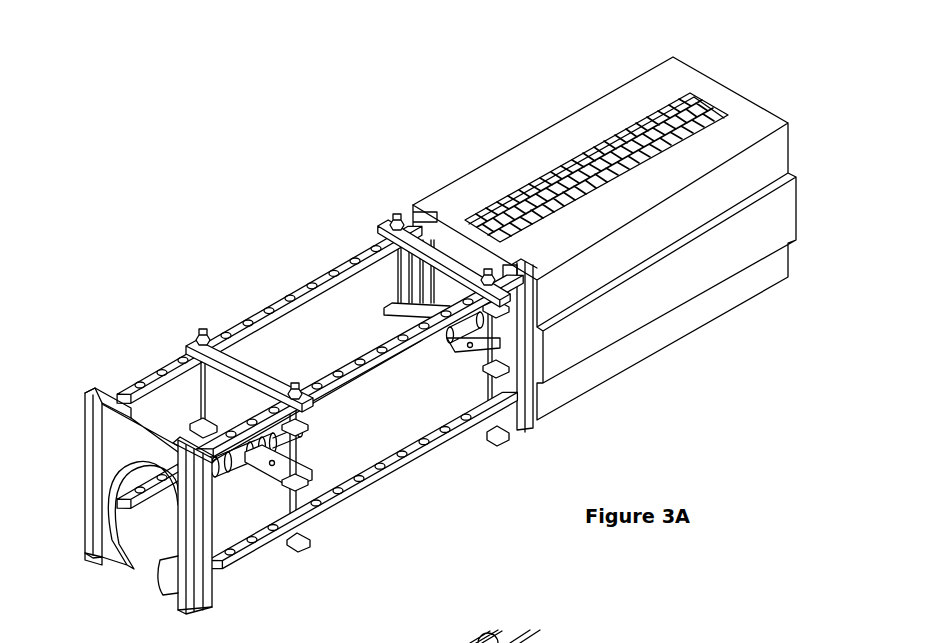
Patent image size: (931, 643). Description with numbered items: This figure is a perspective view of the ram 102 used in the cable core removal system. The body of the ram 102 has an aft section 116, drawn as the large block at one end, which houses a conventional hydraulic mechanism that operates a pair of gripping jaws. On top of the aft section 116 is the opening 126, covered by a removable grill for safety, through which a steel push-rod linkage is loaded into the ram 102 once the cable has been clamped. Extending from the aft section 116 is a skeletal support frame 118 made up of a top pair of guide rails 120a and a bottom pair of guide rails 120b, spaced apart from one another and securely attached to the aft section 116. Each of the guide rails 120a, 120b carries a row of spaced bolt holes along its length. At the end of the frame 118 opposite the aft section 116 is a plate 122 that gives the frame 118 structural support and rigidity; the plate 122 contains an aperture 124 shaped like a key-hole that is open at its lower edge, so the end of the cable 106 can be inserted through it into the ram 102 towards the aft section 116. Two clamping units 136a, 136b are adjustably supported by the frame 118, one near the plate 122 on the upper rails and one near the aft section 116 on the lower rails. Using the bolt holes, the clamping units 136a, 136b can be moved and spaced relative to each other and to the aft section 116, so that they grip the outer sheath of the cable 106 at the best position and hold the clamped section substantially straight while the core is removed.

The ram 102 is at (409, 309).
The cable 106 is at (352, 419).
The aft section 116 is at (604, 212).
The skeletal support frame 118 is at (315, 409).
The top pair of guide rails 120a is at (266, 298).
The bottom pair of guide rails 120b is at (360, 505).
The plate 122 is at (104, 449).
The aperture 124 is at (158, 547).
The opening 126 is at (712, 110).
The clamping unit 136a is at (192, 330).
The clamping unit 136b is at (513, 437).